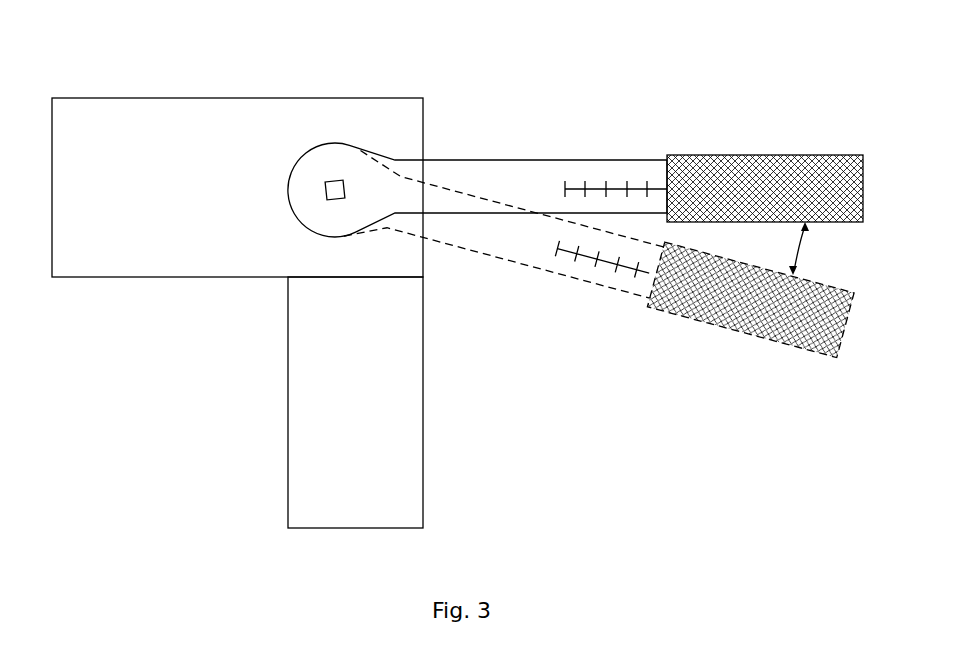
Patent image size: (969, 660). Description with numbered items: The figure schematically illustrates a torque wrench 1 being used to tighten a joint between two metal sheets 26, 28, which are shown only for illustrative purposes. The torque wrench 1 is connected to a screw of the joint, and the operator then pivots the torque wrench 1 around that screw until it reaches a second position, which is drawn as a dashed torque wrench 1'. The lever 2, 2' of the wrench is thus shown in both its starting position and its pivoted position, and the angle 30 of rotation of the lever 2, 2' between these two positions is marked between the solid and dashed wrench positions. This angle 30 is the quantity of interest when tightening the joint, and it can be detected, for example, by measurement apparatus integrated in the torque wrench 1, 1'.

The torque wrench 1 is at (752, 139).
The dashed torque wrench 1' is at (733, 326).
The lever 2 is at (477, 164).
The lever 2' is at (502, 254).
The metal sheet 26 is at (200, 145).
The metal sheet 28 is at (363, 387).
The angle 30 is at (800, 255).